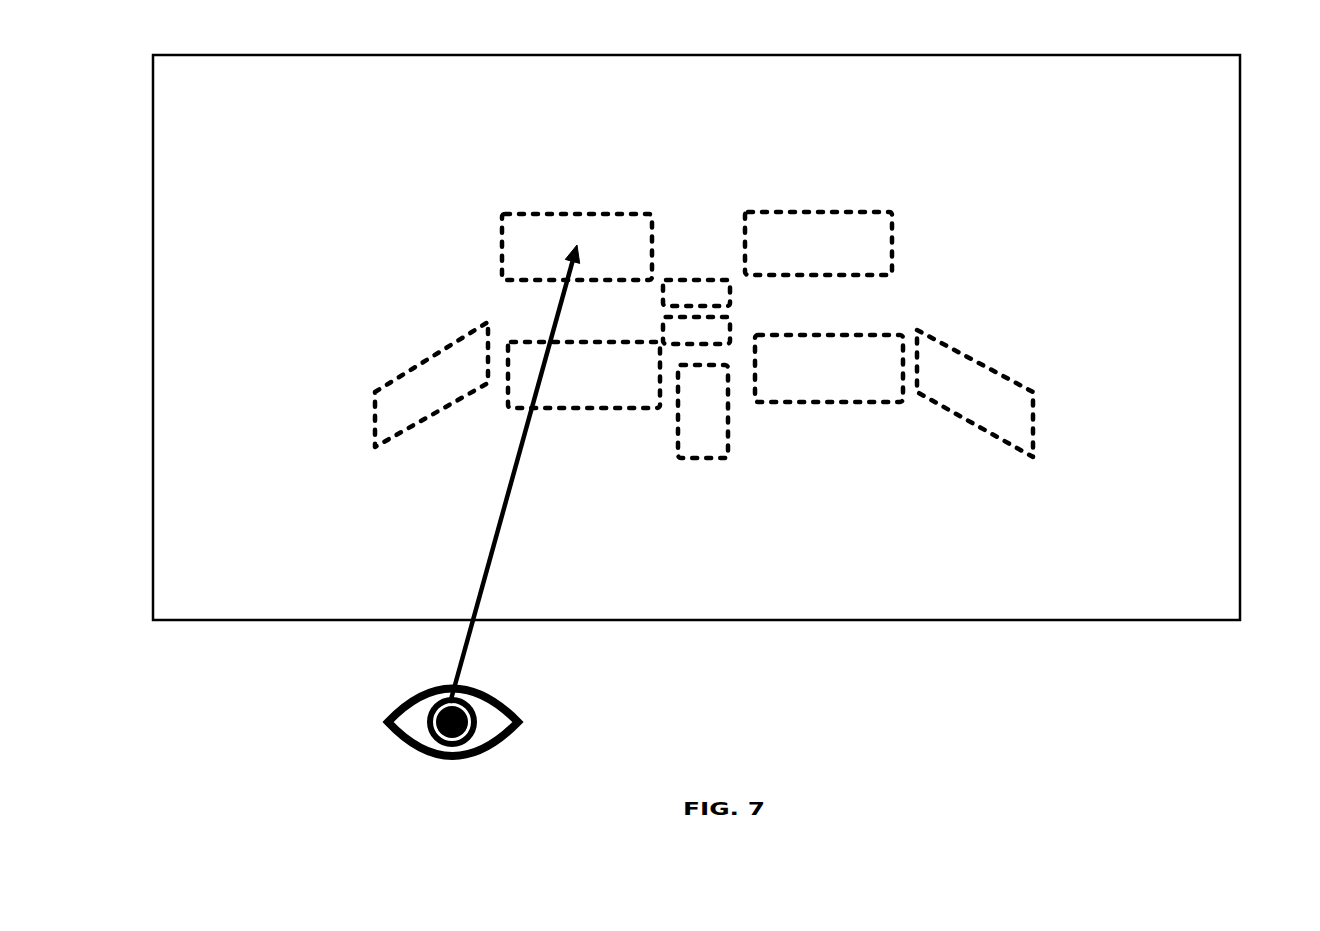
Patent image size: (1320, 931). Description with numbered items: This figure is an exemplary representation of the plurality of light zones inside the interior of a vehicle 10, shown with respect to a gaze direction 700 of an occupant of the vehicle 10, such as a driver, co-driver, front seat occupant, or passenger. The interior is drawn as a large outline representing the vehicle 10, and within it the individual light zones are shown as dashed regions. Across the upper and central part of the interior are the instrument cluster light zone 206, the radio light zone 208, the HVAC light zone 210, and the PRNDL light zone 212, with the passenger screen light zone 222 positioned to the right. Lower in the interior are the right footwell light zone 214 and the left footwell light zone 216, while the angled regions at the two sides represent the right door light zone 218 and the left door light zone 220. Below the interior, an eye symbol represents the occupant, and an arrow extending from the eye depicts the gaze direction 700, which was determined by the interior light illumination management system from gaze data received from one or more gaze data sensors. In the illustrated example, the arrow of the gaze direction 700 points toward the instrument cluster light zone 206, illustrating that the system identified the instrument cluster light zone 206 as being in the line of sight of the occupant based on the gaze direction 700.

The vehicle 10 is at (1241, 110).
The instrument cluster light zone 206 is at (528, 235).
The radio light zone 208 is at (722, 293).
The HVAC light zone 210 is at (668, 322).
The PRNDL light zone 212 is at (690, 443).
The right footwell light zone 214 is at (883, 358).
The left footwell light zone 216 is at (522, 359).
The right door light zone 218 is at (1033, 435).
The left door light zone 220 is at (372, 392).
The passenger screen light zone 222 is at (880, 257).
The gaze direction 700 is at (504, 705).